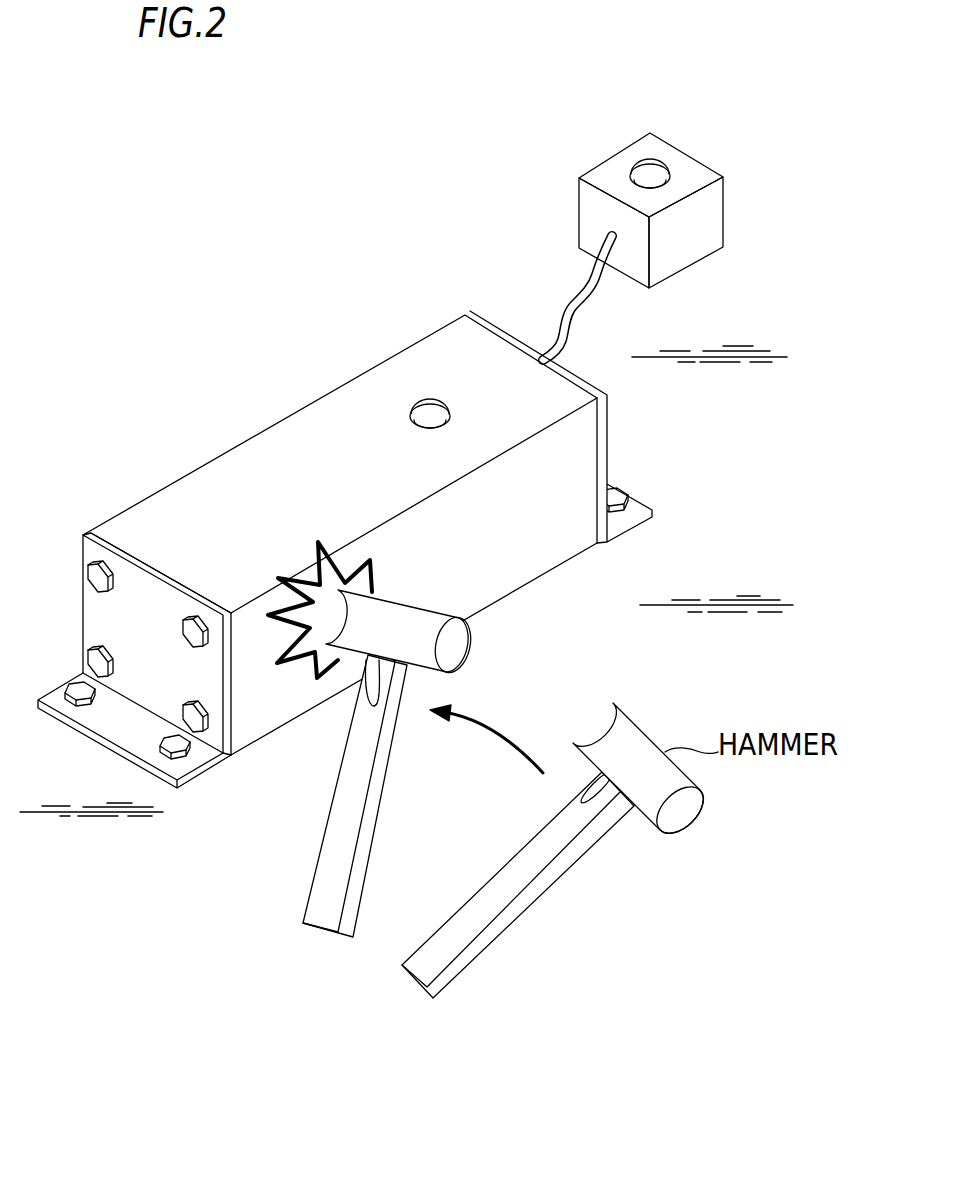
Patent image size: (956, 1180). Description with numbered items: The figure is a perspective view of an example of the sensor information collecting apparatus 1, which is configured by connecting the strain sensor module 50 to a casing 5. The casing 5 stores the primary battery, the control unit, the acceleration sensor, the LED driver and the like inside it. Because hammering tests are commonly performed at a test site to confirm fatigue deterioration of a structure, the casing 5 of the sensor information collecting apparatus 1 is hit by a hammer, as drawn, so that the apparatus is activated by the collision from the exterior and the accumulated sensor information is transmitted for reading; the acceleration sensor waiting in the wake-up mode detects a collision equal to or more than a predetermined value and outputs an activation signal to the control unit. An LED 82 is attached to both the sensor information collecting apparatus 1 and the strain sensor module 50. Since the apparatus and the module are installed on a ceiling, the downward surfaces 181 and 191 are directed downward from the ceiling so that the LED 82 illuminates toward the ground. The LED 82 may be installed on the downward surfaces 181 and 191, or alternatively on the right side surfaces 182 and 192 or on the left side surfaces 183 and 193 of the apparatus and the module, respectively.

The sensor information collecting apparatus 1 is at (365, 507).
The casing 5 is at (340, 535).
The strain sensor module 50 is at (642, 186).
The LED 82 is at (427, 398).
The downward surface 181 is at (328, 447).
The right side surface 182 is at (548, 480).
The left side surface 183 is at (230, 450).
The downward surface 191 is at (615, 153).
The right side surface 192 is at (700, 208).
The left side surface 193 is at (610, 163).